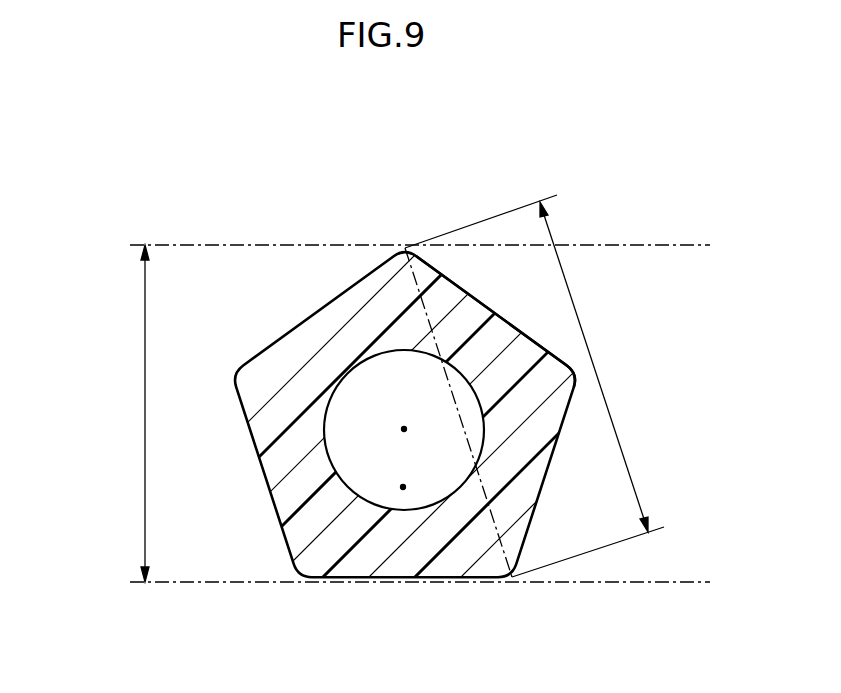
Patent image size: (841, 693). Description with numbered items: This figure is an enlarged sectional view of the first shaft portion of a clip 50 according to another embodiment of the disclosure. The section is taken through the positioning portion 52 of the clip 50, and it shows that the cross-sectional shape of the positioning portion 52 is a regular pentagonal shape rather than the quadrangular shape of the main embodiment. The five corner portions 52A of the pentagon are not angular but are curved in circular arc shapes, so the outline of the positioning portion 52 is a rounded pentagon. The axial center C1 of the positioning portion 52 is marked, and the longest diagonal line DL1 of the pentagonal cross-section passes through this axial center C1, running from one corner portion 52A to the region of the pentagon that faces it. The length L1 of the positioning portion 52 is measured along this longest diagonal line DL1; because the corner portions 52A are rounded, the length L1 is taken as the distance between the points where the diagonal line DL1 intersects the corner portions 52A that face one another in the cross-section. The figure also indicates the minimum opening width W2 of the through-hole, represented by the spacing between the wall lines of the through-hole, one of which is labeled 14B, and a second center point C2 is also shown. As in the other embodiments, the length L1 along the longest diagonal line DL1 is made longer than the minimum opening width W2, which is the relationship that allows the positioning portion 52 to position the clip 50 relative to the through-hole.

The clip 50 is at (704, 372).
The positioning portion 52 is at (535, 336).
The corner portions 52A is at (578, 373).
The side surface of insert seat 14B is at (673, 247).
The longest diagonal line DL1 is at (469, 443).
The minimum opening width W2 is at (143, 412).
The length L1 is at (606, 397).
The axial center C1 is at (402, 428).
The center of mounting hole C2 is at (403, 489).